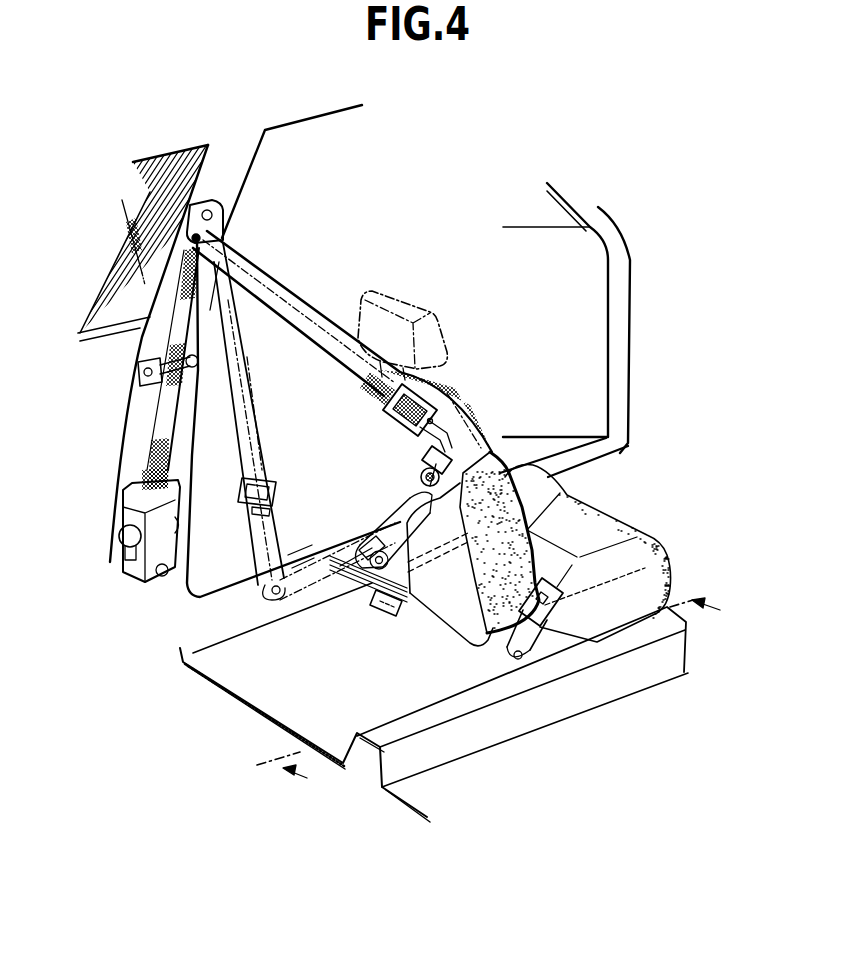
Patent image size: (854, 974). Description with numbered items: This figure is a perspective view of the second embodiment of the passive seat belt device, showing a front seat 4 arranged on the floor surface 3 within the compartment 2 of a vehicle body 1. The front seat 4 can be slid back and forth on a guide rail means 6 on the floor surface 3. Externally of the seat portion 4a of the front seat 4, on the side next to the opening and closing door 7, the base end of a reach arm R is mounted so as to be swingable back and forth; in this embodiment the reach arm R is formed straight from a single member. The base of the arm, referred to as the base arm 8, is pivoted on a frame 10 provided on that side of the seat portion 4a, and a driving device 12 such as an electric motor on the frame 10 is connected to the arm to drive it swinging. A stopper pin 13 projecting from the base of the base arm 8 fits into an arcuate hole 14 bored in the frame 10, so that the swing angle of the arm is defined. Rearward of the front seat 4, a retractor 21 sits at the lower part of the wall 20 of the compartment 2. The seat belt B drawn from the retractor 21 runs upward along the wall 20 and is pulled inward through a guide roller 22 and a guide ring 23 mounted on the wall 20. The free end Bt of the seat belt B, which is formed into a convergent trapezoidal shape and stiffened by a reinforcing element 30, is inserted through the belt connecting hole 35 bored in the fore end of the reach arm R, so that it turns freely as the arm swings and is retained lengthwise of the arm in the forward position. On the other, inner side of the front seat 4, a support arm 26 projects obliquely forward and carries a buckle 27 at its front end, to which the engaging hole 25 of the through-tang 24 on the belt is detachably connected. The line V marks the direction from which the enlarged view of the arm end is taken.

The vehicle body 1 is at (165, 617).
The compartment 2 is at (300, 412).
The floor surface 3 is at (352, 683).
The front seat 4 is at (496, 450).
The seat portion 4a is at (583, 512).
The guide rail means 6 is at (378, 600).
The opening and closing door 7 is at (517, 240).
The base arm 8 is at (297, 573).
The frame 10 is at (345, 583).
The driving device 12 is at (347, 516).
The stopper pin 13 is at (362, 548).
The arcuate hole 14 is at (362, 573).
The wall 20 is at (143, 337).
The retractor 21 is at (123, 515).
The guide roller 22 is at (148, 368).
The guide ring 23 is at (222, 216).
The through-tang 24 is at (432, 392).
The engaging hole 25 is at (452, 392).
The support arm 26 is at (506, 658).
The buckle 27 is at (556, 594).
The reinforcing element 30 is at (432, 455).
The belt connecting hole 35 is at (421, 474).
The seat belt B is at (320, 303).
The free end of the seat belt Bt is at (443, 496).
The reach arm R is at (395, 528).
The line V is at (500, 700).